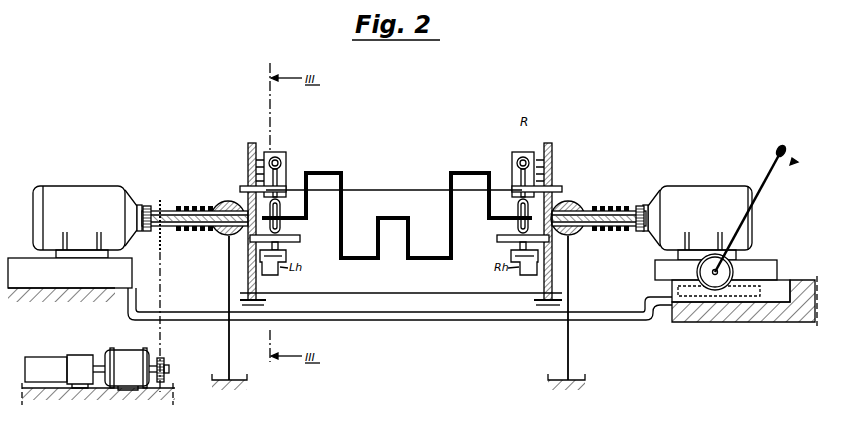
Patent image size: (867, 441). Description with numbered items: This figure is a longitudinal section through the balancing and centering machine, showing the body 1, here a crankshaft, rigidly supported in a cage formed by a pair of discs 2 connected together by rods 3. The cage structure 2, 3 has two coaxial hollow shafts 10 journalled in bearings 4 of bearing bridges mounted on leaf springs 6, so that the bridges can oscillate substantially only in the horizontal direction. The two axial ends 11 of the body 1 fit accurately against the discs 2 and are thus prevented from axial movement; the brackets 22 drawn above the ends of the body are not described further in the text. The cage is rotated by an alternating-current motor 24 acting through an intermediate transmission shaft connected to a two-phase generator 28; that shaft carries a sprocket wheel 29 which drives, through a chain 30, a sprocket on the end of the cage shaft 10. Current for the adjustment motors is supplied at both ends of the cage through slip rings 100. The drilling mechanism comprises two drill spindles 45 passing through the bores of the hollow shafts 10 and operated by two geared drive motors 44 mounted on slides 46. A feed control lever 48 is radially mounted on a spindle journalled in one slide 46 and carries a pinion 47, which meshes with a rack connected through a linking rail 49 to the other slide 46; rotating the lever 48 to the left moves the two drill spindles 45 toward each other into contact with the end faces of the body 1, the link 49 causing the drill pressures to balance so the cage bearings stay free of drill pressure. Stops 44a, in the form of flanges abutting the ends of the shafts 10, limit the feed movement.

The body 1 is at (320, 173).
The discs 2 is at (552, 160).
The rods 3 is at (384, 190).
The bearings 4 is at (228, 202).
The leaf springs 6 is at (229, 296).
The hollow shafts 10 is at (166, 228).
The axial ends 11 is at (283, 218).
The bracket 22 is at (281, 158).
The alternating-current motor 24 is at (127, 356).
The two-phase generator 28 is at (42, 360).
The sprocket wheel 29 is at (164, 366).
The chain 30 is at (161, 339).
The geared drive motors 44 is at (79, 195).
The stops 44a is at (148, 231).
The drill spindles 45 is at (161, 200).
The slides 46 is at (22, 262).
The pinion 47 is at (715, 290).
The feed control lever 48 is at (760, 192).
The linking rail 49 is at (346, 322).
The slip rings 100 is at (195, 205).